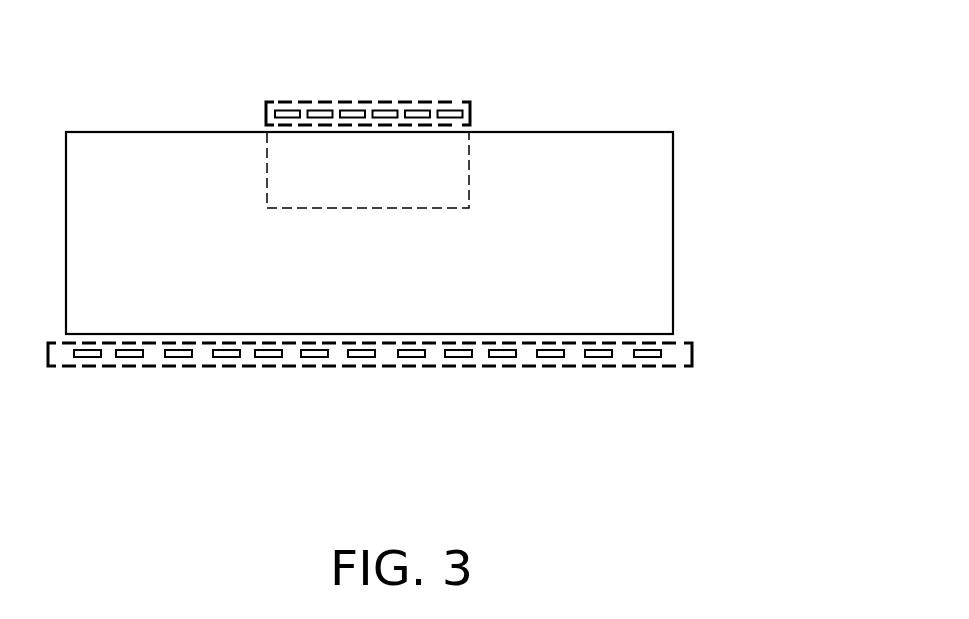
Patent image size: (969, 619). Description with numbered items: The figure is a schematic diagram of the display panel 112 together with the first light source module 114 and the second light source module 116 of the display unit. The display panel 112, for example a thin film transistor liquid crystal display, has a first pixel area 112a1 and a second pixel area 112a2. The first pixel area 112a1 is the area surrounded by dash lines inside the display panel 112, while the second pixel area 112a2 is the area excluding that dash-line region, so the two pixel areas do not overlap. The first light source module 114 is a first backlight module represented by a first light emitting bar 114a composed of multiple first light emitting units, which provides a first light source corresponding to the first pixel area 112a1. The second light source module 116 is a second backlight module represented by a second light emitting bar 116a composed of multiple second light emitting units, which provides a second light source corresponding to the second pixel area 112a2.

The display panel 112 is at (458, 206).
The first pixel area 112a1 is at (470, 155).
The second pixel area 112a2 is at (652, 213).
The first light source module 114 is at (458, 74).
The first light emitting bar 114a is at (450, 100).
The second light source module 116 is at (451, 344).
The second light emitting bar 116a is at (692, 353).